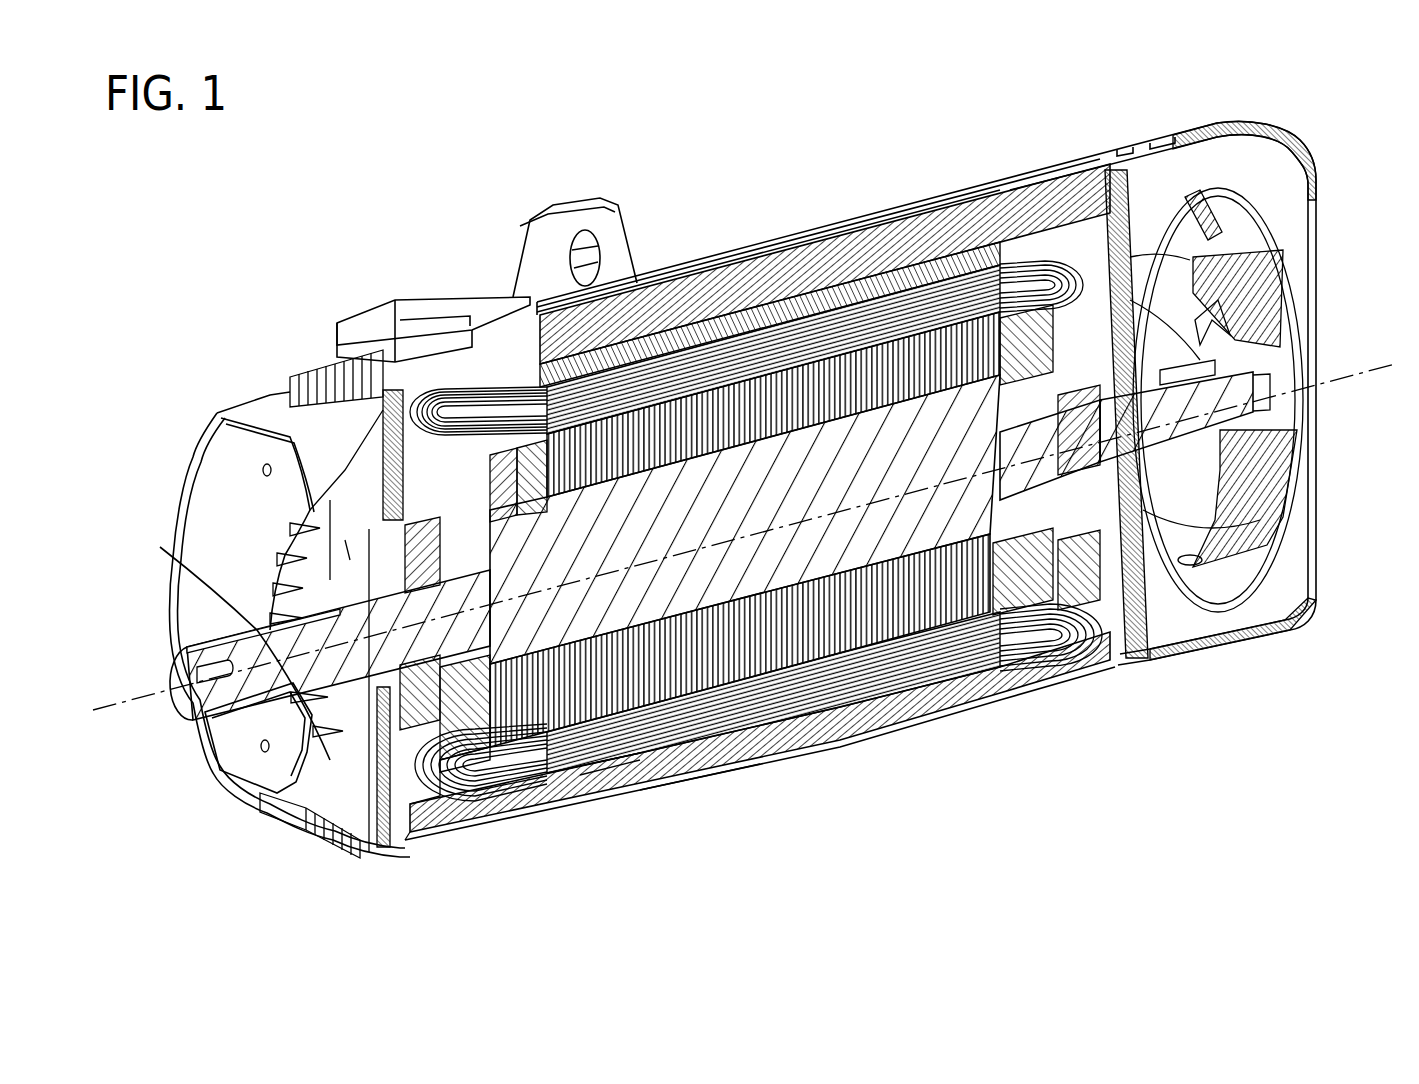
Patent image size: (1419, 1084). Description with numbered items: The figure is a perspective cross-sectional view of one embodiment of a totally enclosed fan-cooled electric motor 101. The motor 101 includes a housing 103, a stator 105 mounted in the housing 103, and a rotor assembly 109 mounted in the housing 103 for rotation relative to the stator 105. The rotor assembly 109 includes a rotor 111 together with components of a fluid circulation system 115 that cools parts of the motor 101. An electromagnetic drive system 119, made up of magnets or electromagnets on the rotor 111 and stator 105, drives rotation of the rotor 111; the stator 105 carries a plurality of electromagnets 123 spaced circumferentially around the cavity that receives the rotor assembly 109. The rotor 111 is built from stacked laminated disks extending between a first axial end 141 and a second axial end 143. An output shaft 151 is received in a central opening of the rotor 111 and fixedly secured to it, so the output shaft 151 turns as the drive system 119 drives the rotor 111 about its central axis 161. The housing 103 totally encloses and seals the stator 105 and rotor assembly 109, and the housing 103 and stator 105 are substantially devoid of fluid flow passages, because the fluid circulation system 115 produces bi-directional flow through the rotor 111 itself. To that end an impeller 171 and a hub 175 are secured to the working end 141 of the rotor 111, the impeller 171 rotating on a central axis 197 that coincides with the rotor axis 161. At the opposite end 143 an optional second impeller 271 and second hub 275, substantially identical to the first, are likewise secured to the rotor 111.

The electric motor 101 is at (403, 190).
The housing 103 is at (745, 240).
The stator 105 is at (891, 282).
The rotor assembly 109 is at (1085, 558).
The rotor 111 is at (930, 626).
The fluid circulation system 115 is at (448, 488).
The electromagnetic drive system 119 is at (471, 392).
The electromagnets 123 is at (700, 780).
The first axial end 141 is at (455, 770).
The second axial end 143 is at (1318, 541).
The output shaft 151 is at (250, 640).
The central axis 161 is at (1350, 410).
The impeller 171 is at (497, 762).
The hub 175 is at (607, 768).
The central axis 197 is at (1302, 400).
The second impeller 271 is at (1120, 657).
The second hub 275 is at (1005, 603).